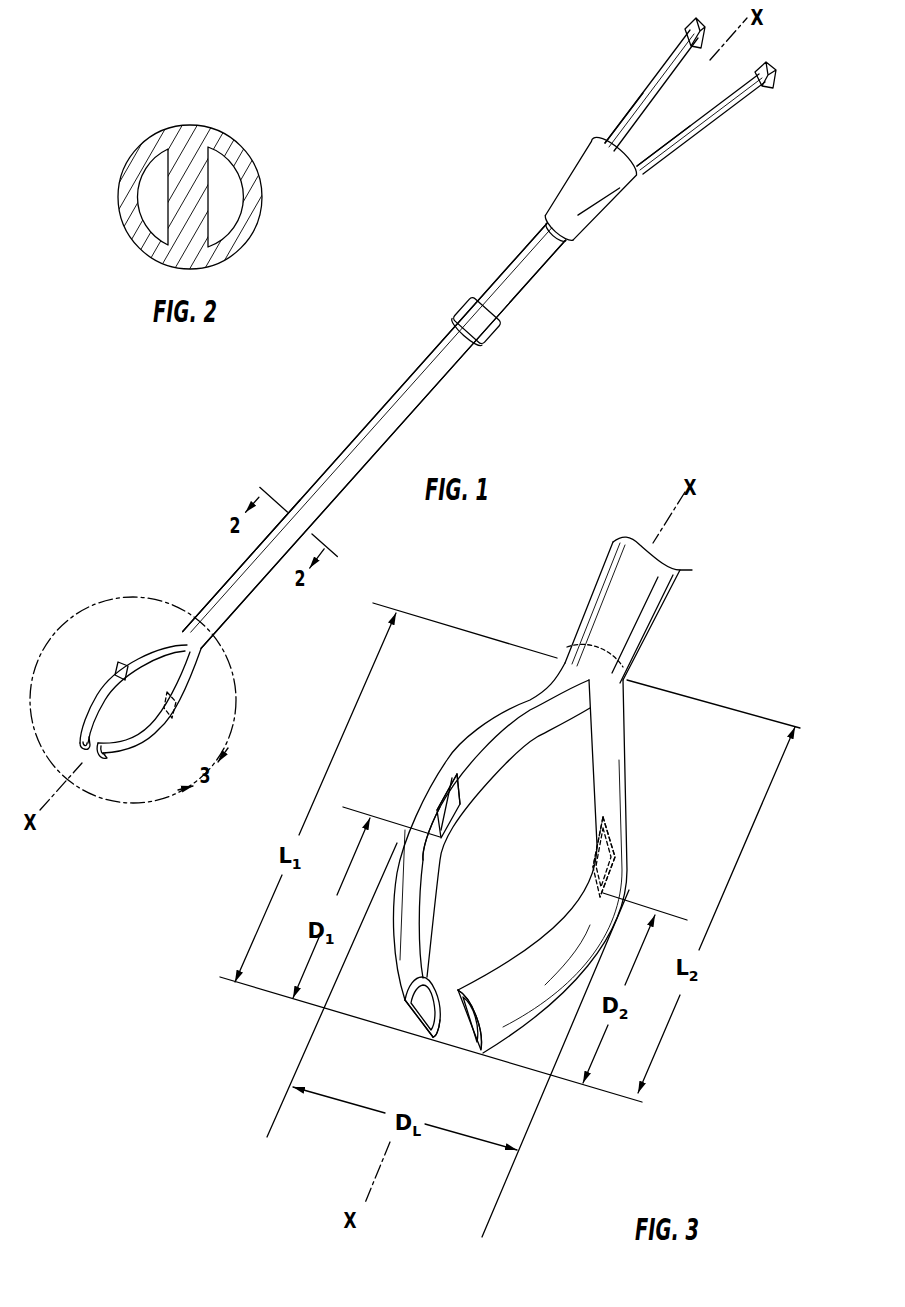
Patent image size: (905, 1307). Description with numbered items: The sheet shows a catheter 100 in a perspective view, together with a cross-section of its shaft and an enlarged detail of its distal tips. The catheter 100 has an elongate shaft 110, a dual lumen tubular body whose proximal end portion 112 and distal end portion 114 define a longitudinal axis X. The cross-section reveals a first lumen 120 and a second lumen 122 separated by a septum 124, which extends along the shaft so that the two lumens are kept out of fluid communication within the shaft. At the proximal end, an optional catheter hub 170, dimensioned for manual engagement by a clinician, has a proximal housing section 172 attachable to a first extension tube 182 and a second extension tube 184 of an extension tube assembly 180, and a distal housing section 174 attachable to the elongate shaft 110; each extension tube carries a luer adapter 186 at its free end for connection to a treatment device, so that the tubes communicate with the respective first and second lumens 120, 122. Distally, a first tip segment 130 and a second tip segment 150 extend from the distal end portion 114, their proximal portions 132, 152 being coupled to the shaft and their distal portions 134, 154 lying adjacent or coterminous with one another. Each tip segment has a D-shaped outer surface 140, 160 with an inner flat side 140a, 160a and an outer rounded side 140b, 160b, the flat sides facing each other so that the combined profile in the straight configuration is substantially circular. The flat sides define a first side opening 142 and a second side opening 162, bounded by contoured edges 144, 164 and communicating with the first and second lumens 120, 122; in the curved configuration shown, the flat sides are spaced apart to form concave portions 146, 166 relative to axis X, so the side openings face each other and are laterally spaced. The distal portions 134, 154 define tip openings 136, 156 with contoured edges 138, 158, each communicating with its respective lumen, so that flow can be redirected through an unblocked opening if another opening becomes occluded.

In FIG. 1, the catheter 100 is at (634, 332).
In FIG. 1, the elongate shaft 110 is at (437, 391).
In FIG. 2, the elongate shaft 110 is at (134, 141).
In FIG. 3, the elongate shaft 110 is at (604, 558).
In FIG. 1, the proximal end portion 112 is at (520, 263).
In FIG. 1, the distal end portion 114 is at (242, 591).
In FIG. 3, the distal end portion 114 is at (656, 616).
In FIG. 2, the first lumen 120 is at (150, 197).
In FIG. 3, the first lumen 120 is at (418, 1027).
In FIG. 2, the second lumen 122 is at (230, 200).
In FIG. 3, the second lumen 122 is at (469, 1037).
In FIG. 2, the septum 124 is at (190, 140).
In FIG. 1, the first tip segment 130 is at (118, 654).
In FIG. 3, the first tip segment 130 is at (480, 722).
In FIG. 3, the proximal portion of first tip segment 132 is at (538, 697).
In FIG. 3, the distal portion of first tip segment 134 is at (403, 1001).
In FIG. 3, the tip opening of first tip segment 136 is at (422, 1046).
In FIG. 3, the edge of first tip opening 138 is at (418, 1018).
In FIG. 3, the D-shaped outer surface of first tip segment 140 is at (433, 775).
In FIG. 3, the flat side of first tip segment 140a is at (488, 767).
In FIG. 3, the rounded side of first tip segment 140b is at (455, 748).
In FIG. 3, the first side opening 142 is at (440, 800).
In FIG. 3, the edge of first side opening 144 is at (445, 818).
In FIG. 3, the concave portion of first tip segment 146 is at (432, 862).
In FIG. 1, the second tip segment 150 is at (188, 704).
In FIG. 3, the second tip segment 150 is at (633, 790).
In FIG. 3, the proximal portion of second tip segment 152 is at (624, 712).
In FIG. 3, the distal portion of second tip segment 154 is at (510, 1034).
In FIG. 3, the tip opening of second tip segment 156 is at (469, 1061).
In FIG. 3, the edge of second tip opening 158 is at (483, 1021).
In FIG. 3, the D-shaped outer surface of second tip segment 160 is at (634, 828).
In FIG. 3, the flat side of second tip segment 160a is at (595, 797).
In FIG. 3, the rounded side of second tip segment 160b is at (632, 853).
In FIG. 3, the second side opening 162 is at (616, 868).
In FIG. 3, the edge of second side opening 164 is at (591, 862).
In FIG. 3, the concave portion of second tip segment 166 is at (562, 905).
In FIG. 1, the catheter hub 170 is at (578, 180).
In FIG. 1, the proximal housing section 172 is at (637, 180).
In FIG. 1, the distal housing section 174 is at (570, 240).
In FIG. 1, the extension tube assembly 180 is at (661, 103).
In FIG. 1, the first extension tube 182 is at (638, 110).
In FIG. 1, the second extension tube 184 is at (700, 127).
In FIG. 1, the luer adapter 186 is at (690, 26).